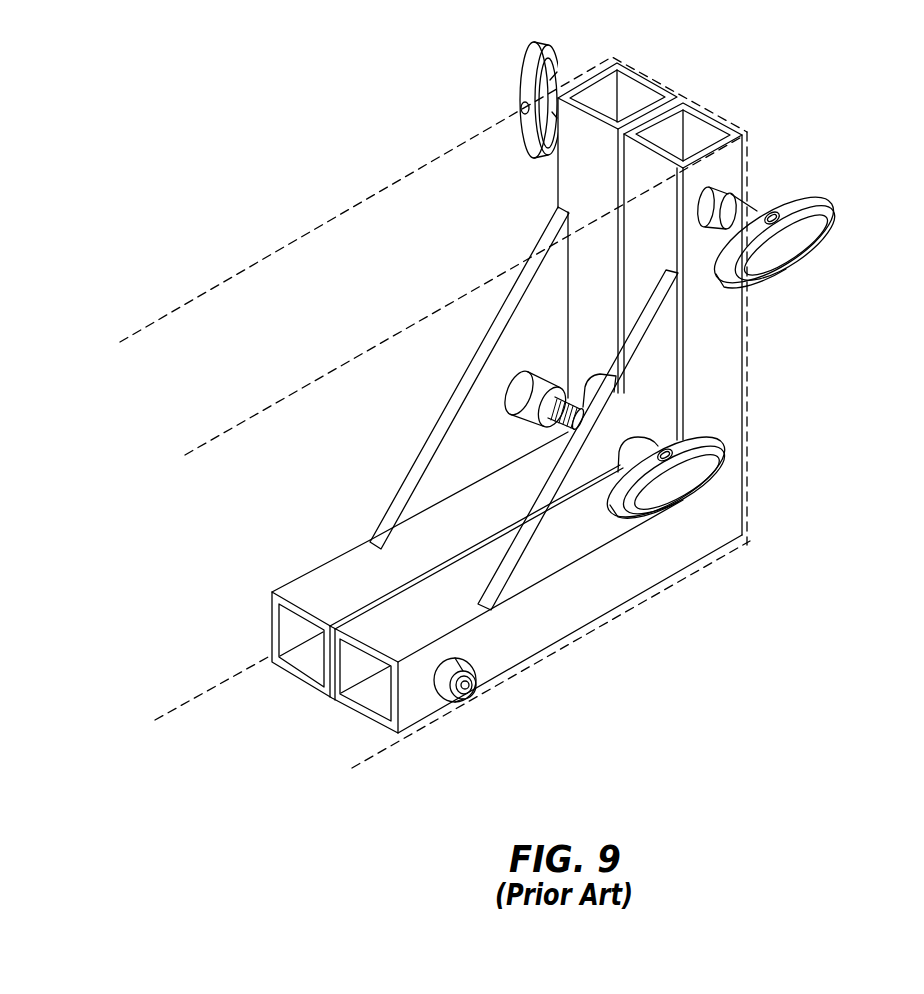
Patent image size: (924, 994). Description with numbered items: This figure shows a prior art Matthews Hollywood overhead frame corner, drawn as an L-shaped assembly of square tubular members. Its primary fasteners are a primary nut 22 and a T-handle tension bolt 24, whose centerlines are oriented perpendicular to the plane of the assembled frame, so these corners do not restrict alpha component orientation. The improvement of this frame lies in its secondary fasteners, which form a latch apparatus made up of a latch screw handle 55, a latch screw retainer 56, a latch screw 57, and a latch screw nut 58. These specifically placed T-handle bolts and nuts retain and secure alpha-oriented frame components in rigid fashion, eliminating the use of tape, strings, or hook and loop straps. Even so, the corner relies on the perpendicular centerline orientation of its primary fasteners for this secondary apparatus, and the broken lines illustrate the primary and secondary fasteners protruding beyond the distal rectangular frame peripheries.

The primary nut 22 is at (296, 574).
The T-handle tension bolt 24 is at (525, 130).
The latch screw handle 55 is at (700, 480).
The latch screw retainer 56 is at (592, 383).
The latch screw 57 is at (557, 430).
The latch screw nut 58 is at (510, 391).